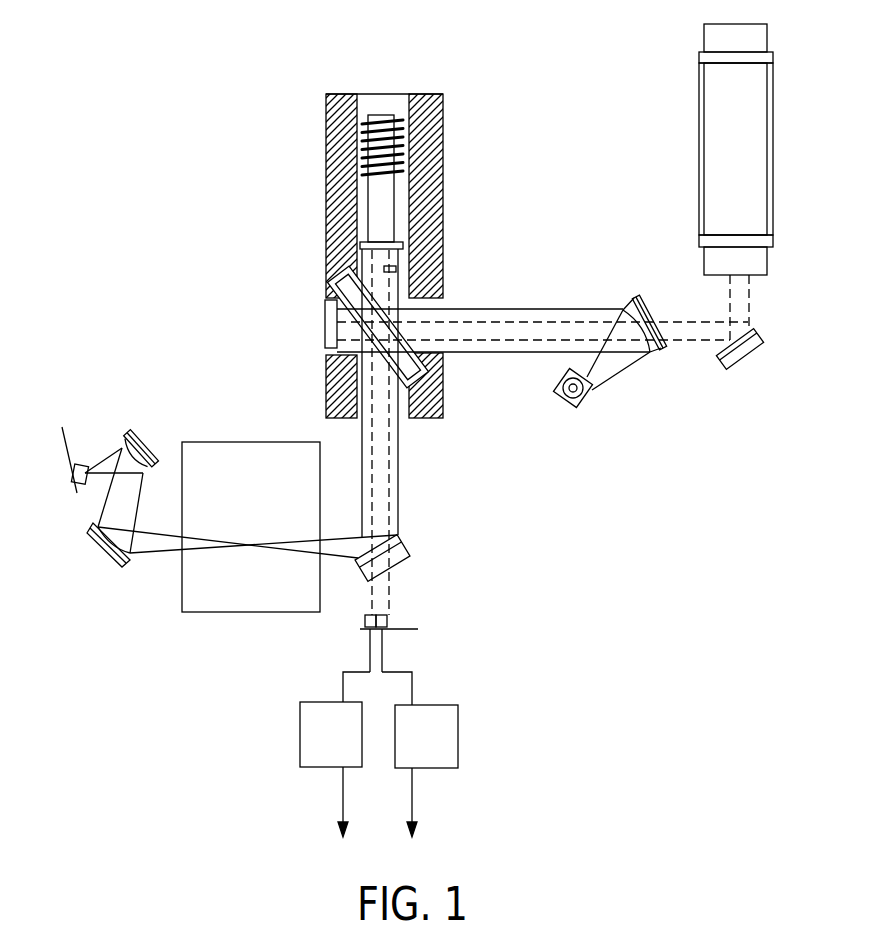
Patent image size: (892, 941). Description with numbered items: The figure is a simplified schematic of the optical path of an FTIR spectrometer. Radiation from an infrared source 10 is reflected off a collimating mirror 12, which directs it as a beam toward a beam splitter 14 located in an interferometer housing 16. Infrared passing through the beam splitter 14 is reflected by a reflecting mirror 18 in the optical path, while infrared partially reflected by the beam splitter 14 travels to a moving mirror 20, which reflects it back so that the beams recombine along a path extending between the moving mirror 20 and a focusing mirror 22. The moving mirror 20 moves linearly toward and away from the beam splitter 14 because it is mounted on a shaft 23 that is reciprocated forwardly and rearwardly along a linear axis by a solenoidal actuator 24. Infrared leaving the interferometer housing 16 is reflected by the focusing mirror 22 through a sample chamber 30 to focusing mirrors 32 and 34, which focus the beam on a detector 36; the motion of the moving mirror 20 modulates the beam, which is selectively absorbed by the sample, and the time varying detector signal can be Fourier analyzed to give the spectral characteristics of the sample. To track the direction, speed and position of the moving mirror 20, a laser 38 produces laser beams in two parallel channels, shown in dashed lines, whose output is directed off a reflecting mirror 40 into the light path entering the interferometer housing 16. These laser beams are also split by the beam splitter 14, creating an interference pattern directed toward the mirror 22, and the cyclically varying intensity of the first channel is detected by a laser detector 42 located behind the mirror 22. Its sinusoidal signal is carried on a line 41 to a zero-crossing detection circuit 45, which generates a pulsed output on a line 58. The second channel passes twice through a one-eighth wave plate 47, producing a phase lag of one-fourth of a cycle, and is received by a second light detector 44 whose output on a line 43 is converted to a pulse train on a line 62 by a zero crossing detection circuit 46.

The infrared source 10 is at (580, 402).
The collimating mirror 12 is at (631, 298).
The beam splitter 14 is at (435, 357).
The interferometer housing 16 is at (326, 215).
The reflecting mirror 18 is at (333, 325).
The moving mirror 20 is at (403, 245).
The focusing mirror 22 is at (400, 537).
The shaft 23 is at (380, 107).
The solenoidal actuator 24 is at (402, 120).
The sample chamber 30 is at (213, 610).
The focusing mirror 32 is at (127, 563).
The focusing mirror 34 is at (148, 467).
The detector 36 is at (73, 462).
The laser 38 is at (697, 145).
The reflecting mirror 40 is at (750, 329).
The line 41 is at (343, 682).
The laser detector 42 is at (363, 620).
The line 43 is at (412, 682).
The second light detector 44 is at (387, 617).
The zero-crossing detection circuit 45 is at (300, 735).
The zero crossing detection circuit 46 is at (457, 737).
The one-eighth wave plate 47 is at (397, 268).
The line 58 is at (343, 797).
The line 62 is at (410, 797).